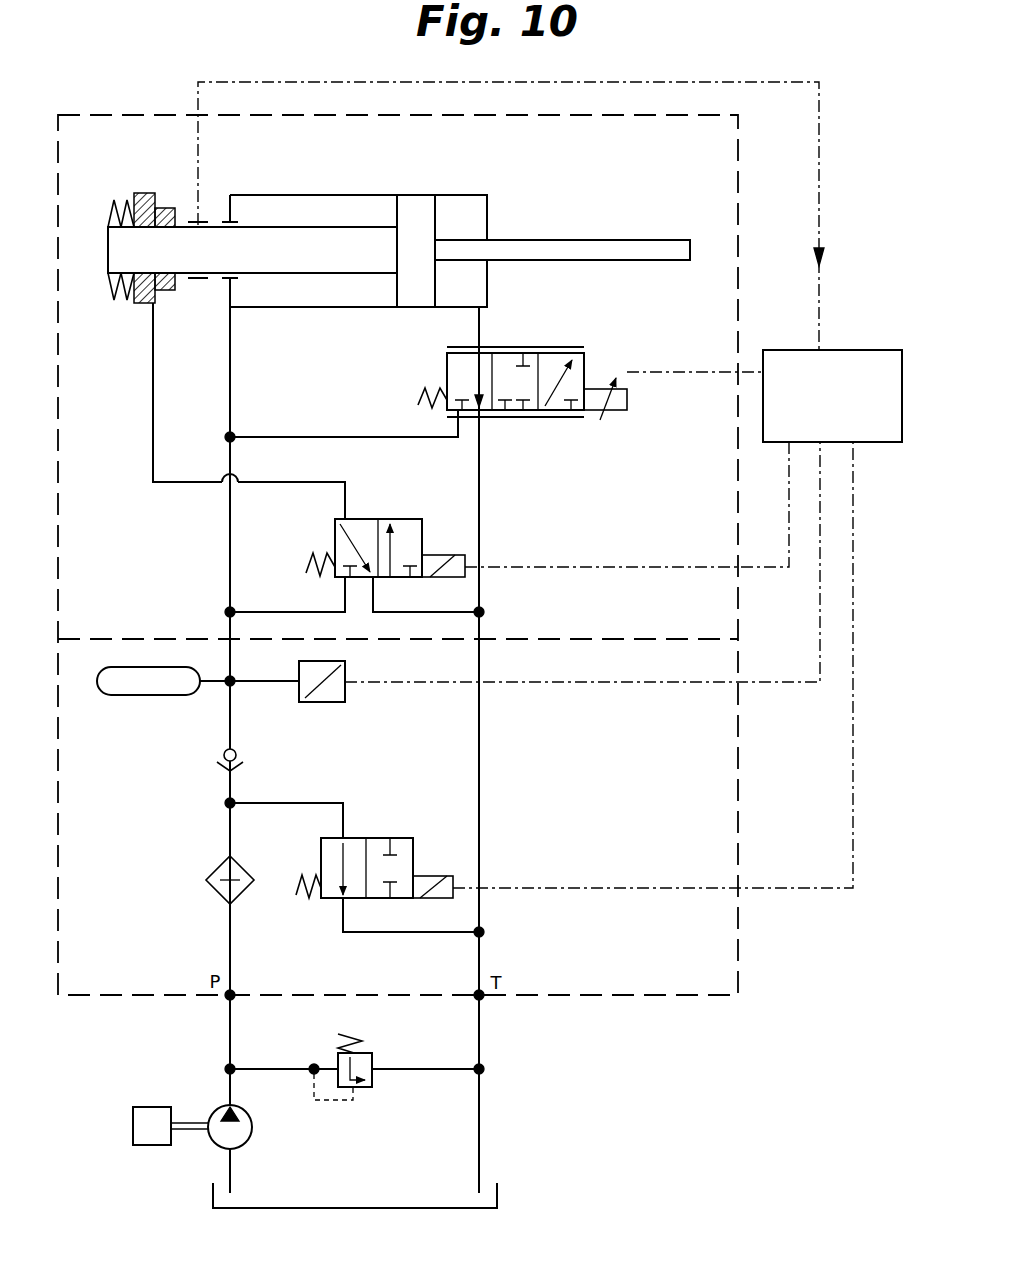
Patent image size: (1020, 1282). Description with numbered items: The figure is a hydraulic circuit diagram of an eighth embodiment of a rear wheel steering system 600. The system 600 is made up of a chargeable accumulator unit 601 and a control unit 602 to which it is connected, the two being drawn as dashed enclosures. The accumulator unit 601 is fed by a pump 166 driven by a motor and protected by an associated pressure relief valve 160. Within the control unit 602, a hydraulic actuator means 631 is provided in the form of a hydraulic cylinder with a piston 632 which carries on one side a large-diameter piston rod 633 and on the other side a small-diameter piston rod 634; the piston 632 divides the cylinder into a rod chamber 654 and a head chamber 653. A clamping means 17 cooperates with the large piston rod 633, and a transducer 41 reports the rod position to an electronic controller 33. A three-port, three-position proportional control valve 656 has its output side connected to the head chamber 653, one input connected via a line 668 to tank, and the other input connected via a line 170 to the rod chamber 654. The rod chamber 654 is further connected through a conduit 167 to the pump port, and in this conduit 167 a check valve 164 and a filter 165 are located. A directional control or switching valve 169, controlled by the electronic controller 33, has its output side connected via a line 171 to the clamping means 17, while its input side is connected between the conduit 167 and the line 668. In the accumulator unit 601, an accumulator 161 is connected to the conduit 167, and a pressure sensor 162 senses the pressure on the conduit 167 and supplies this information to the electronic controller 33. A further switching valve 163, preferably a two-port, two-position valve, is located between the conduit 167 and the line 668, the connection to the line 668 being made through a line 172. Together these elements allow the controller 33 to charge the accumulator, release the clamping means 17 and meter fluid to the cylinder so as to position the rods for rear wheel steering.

The clamping means 17 is at (140, 304).
The electronic controller 33 is at (855, 349).
The transducer 41 is at (199, 220).
The pressure relief valve 160 is at (372, 1055).
The accumulator 161 is at (126, 695).
The pressure sensor 162 is at (319, 702).
The switching valve 163 is at (385, 838).
The check valve 164 is at (223, 755).
The filter 165 is at (214, 867).
The pump 166 is at (250, 1129).
The conduit 167 is at (230, 541).
The switching valve 169 is at (413, 519).
The line 170 is at (320, 437).
The line 171 is at (188, 482).
The line 172 is at (408, 934).
The rear wheel steering system 600 is at (767, 937).
The accumulator unit 601 is at (650, 1000).
The control unit 602 is at (744, 216).
The hydraulic actuator means 631 is at (369, 247).
The piston 632 is at (413, 204).
The piston rod 633 is at (314, 235).
The piston rod 634 is at (535, 260).
The head chamber 653 is at (487, 217).
The rod chamber 654 is at (280, 307).
The proportional control valve 656 is at (578, 346).
The line 668 is at (480, 775).